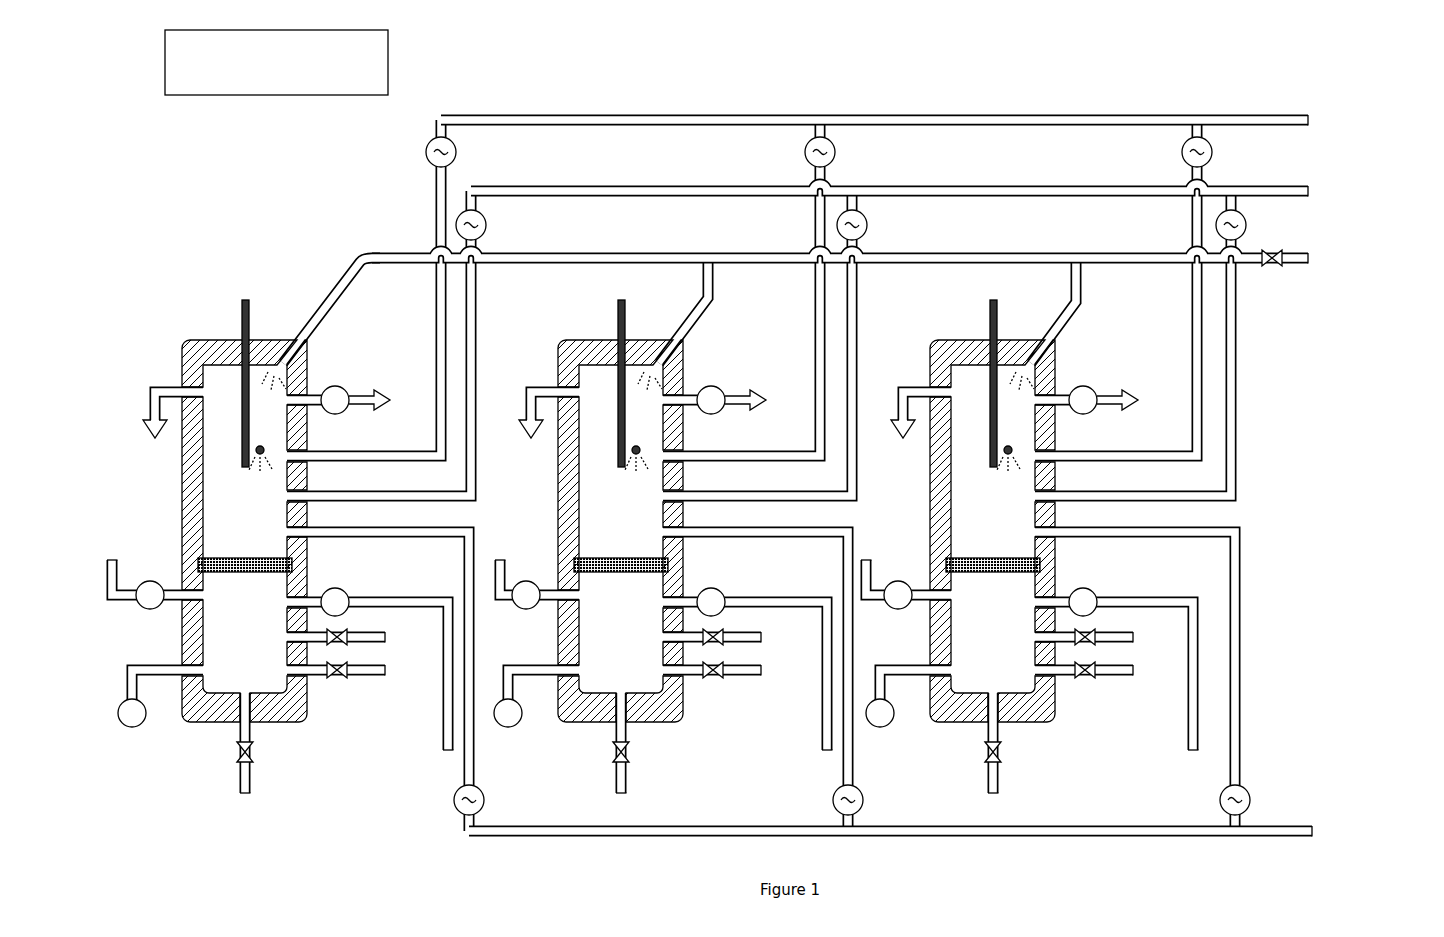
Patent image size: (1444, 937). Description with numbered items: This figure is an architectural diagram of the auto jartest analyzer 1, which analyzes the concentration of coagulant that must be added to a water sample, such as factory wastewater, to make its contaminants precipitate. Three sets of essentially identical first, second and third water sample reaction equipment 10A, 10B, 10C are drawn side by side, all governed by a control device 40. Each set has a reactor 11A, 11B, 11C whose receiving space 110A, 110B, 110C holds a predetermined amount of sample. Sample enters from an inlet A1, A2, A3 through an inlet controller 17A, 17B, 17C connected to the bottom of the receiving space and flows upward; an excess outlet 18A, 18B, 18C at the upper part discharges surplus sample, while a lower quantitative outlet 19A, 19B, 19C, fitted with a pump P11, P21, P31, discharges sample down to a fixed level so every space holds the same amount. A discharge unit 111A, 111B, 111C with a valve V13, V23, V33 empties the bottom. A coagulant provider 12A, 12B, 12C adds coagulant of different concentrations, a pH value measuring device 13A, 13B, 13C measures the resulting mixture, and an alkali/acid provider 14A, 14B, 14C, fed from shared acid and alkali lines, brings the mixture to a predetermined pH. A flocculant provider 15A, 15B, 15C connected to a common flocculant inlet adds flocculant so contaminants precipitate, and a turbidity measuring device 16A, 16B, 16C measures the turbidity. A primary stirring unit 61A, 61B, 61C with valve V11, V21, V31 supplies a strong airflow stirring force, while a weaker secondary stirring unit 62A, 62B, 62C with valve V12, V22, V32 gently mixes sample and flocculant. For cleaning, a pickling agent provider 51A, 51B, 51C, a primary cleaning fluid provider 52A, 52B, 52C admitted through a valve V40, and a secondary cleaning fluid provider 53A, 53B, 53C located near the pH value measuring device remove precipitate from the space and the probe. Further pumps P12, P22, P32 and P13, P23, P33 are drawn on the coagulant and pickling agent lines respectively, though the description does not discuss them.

The auto jartest analyzer 1 is at (734, 437).
The control device 40 is at (276, 62).
The first water sample reaction equipment 10A is at (187, 496).
The second water sample reaction equipment 10B is at (611, 541).
The third water sample reaction equipment 10C is at (981, 542).
The reactor 11A is at (187, 514).
The reactor 11B is at (640, 576).
The reactor 11C is at (1010, 577).
The receiving space 110A is at (190, 340).
The receiving space 110B is at (640, 576).
The receiving space 110C is at (1010, 577).
The coagulant provider 12A is at (387, 597).
The coagulant provider 12B is at (763, 597).
The coagulant provider 12C is at (1135, 597).
The pH value measuring device 13A is at (240, 318).
The pH value measuring device 13B is at (616, 318).
The pH value measuring device 13C is at (988, 318).
The alkali/acid provider 14A is at (468, 312).
The alkali/acid provider 14B is at (848, 312).
The alkali/acid provider 14C is at (1226, 312).
The flocculant provider 15A is at (375, 533).
The flocculant provider 15B is at (751, 533).
The flocculant provider 15C is at (1123, 533).
The turbidity measuring device 16A is at (233, 556).
The turbidity measuring device 16B is at (609, 556).
The turbidity measuring device 16C is at (981, 556).
The inlet controller 17A is at (147, 665).
The inlet controller 17B is at (543, 676).
The inlet controller 17C is at (918, 676).
The excess outlet 18A is at (147, 392).
The excess outlet 18B is at (527, 388).
The excess outlet 18C is at (900, 385).
The quantitative outlet 19A is at (365, 407).
The quantitative outlet 19B is at (741, 407).
The quantitative outlet 19C is at (1113, 407).
The pickling agent provider 51A is at (104, 590).
The pickling agent provider 51B is at (498, 600).
The pickling agent provider 51C is at (884, 600).
The primary cleaning fluid provider 52A is at (313, 318).
The primary cleaning fluid provider 52B is at (689, 318).
The primary cleaning fluid provider 52C is at (1061, 318).
The secondary cleaning fluid provider 53A is at (258, 442).
The secondary cleaning fluid provider 53B is at (634, 442).
The secondary cleaning fluid provider 53C is at (1006, 442).
The primary stirring unit 61A is at (367, 645).
The primary stirring unit 61B is at (743, 645).
The primary stirring unit 61C is at (1115, 645).
The secondary stirring unit 62A is at (313, 690).
The secondary stirring unit 62B is at (689, 690).
The secondary stirring unit 62C is at (1061, 690).
The discharge unit 111A is at (238, 775).
The discharge unit 111B is at (614, 775).
The discharge unit 111C is at (986, 775).
The pump P11 is at (335, 400).
The coagulant pump A P12 is at (335, 602).
The pickling agent pump A P13 is at (150, 595).
The pump P21 is at (711, 400).
The coagulant pump B P22 is at (711, 602).
The pickling agent pump B P23 is at (526, 595).
The pump P31 is at (1083, 400).
The coagulant pump C P32 is at (1083, 602).
The pickling agent pump C P33 is at (898, 595).
The valve V11 is at (338, 646).
The valve V12 is at (338, 679).
The valve V13 is at (262, 752).
The valve V21 is at (714, 646).
The valve V22 is at (714, 679).
The valve V23 is at (638, 753).
The valve V31 is at (1086, 646).
The valve V32 is at (1086, 679).
The valve V33 is at (1012, 752).
The valve V40 is at (1270, 271).
The inlet A1 is at (132, 713).
The inlet A2 is at (508, 713).
The inlet A3 is at (880, 713).